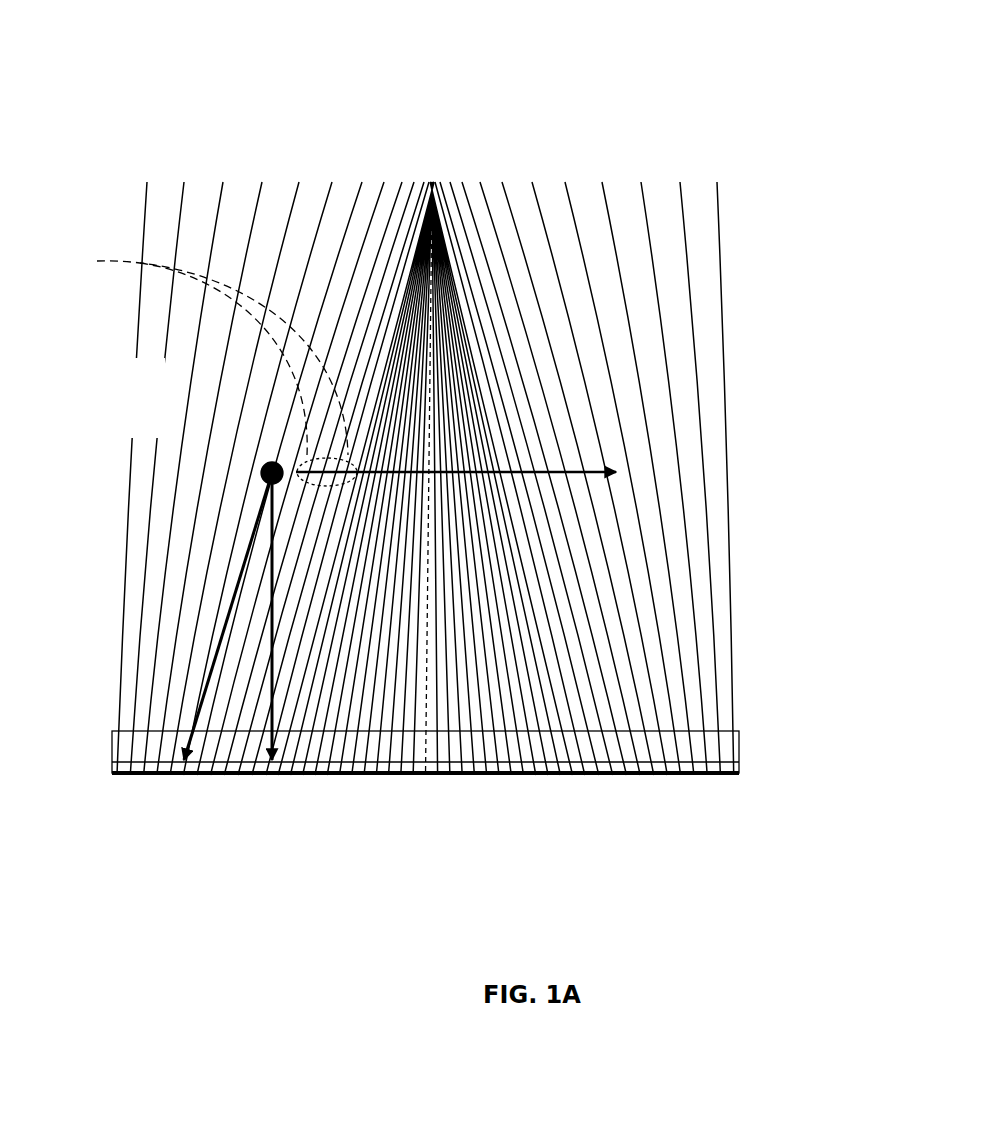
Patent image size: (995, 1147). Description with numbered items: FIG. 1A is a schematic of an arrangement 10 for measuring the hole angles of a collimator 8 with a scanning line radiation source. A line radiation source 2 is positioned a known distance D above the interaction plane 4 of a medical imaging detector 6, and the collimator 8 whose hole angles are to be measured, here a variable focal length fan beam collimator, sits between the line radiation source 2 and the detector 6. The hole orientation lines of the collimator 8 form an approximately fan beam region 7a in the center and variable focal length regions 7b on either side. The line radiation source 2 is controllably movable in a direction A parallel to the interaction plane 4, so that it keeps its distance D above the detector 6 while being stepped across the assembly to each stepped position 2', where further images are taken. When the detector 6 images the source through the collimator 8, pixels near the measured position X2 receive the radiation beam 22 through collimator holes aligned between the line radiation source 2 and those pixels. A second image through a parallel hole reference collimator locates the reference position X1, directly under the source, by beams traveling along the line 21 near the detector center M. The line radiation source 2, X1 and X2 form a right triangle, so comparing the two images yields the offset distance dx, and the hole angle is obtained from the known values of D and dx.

The arrangement 10 is at (481, 40).
The medical imaging detector 6 is at (593, 776).
The variable focal length regions 7b is at (143, 165).
The fan beam region 7a is at (468, 339).
The stepped position 2' is at (211, 363).
The line radiation source 2 is at (193, 421).
The direction A is at (600, 466).
The radiation beam 22 is at (212, 657).
The distance D is at (272, 616).
The line 21 is at (258, 686).
The display center point M is at (433, 780).
The reference position X1 is at (274, 780).
The measured position X2 is at (176, 780).
The offset distance dx is at (272, 788).
The collimator 8 is at (693, 742).
The interaction plane 4 is at (740, 768).